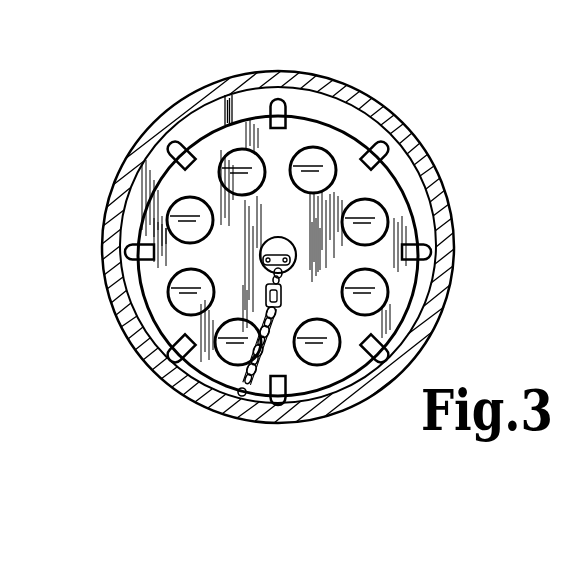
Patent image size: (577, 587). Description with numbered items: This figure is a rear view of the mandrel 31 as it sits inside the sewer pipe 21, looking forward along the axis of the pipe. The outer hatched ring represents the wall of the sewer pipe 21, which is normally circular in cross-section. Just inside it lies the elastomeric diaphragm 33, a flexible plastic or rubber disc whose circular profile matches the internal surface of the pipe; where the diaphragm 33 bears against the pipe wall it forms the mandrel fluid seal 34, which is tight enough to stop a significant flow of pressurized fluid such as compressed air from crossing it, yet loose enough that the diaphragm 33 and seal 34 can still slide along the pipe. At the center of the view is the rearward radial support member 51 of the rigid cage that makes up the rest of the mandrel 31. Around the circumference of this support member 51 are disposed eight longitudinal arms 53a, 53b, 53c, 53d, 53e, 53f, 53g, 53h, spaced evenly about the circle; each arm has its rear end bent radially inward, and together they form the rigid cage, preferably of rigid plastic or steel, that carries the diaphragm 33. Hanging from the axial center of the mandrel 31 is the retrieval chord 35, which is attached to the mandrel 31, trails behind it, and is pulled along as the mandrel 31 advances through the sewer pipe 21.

The sewer pipe 21 is at (438, 198).
The mandrel 31 is at (150, 315).
The elastomeric diaphragm 33 is at (193, 120).
The mandrel fluid seal 34 is at (412, 167).
The retrieval chord 35 is at (236, 378).
The rearward radial support member 51 is at (278, 218).
The arm 53a is at (287, 110).
The arm 53b is at (394, 150).
The arm 53c is at (436, 254).
The arm 53d is at (388, 368).
The arm 53e is at (280, 408).
The arm 53f is at (157, 373).
The arm 53g is at (118, 256).
The arm 53h is at (162, 150).